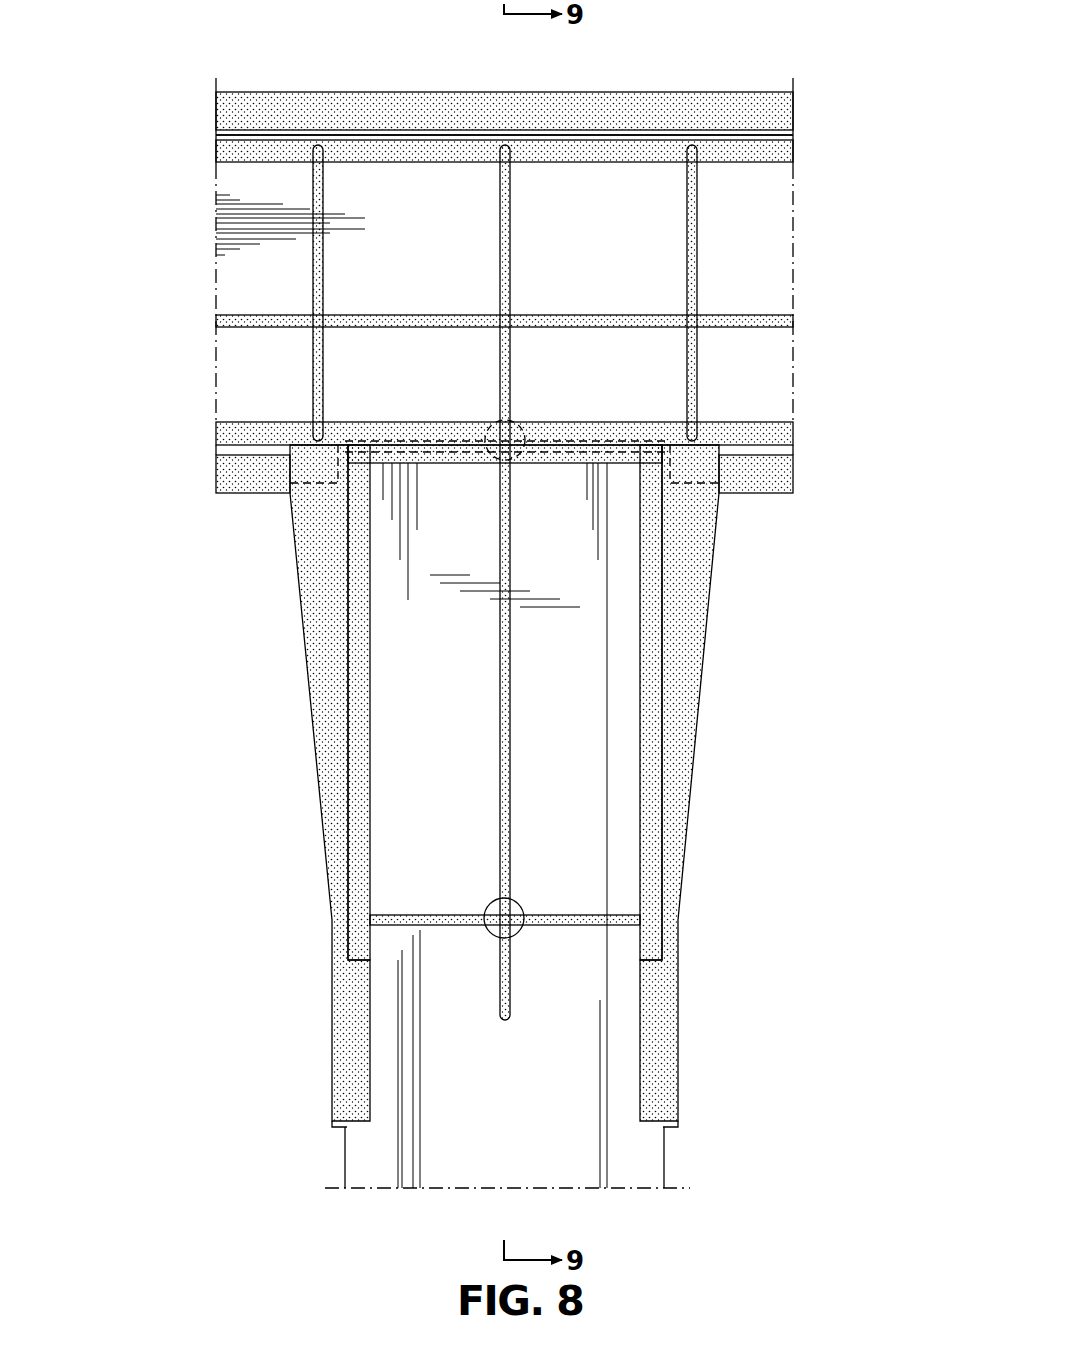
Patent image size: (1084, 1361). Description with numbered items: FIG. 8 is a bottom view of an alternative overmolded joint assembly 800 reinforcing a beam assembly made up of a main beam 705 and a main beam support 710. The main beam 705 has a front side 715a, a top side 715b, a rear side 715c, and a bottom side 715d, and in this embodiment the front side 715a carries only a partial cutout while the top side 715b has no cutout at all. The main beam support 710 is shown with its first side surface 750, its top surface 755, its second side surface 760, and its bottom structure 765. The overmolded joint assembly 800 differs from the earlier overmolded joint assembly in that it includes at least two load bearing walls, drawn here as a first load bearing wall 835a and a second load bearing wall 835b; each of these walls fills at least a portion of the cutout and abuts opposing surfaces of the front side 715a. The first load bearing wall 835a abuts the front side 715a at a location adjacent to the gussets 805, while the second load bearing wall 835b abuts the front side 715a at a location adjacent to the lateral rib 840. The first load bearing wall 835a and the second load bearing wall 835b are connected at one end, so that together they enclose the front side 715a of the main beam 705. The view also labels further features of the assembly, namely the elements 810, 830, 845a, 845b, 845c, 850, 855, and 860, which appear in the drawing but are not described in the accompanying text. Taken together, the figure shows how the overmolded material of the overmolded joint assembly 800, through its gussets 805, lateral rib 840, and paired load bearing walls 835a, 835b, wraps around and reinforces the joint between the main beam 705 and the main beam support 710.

The main beam 705 is at (755, 242).
The main beam support 710 is at (665, 1128).
The front side 715a is at (450, 443).
The top side 715b is at (768, 292).
The rear side 715c is at (232, 135).
The bottom side 715d is at (255, 270).
The first side surface 750 is at (665, 1170).
The top surface 755 is at (495, 1140).
The second side surface 760 is at (352, 1157).
The bottom structure 765 is at (365, 1110).
The overmolded joint assembly 800 is at (740, 590).
The gussets 805 is at (362, 608).
The gate region 810 is at (302, 495).
The refractory wall 830 is at (720, 105).
The first load bearing wall 835a is at (436, 462).
The second load bearing wall 835b is at (620, 432).
The lateral rib 840 is at (245, 152).
The pillar 845a is at (322, 142).
The pillar 845b is at (505, 143).
The pillar 845c is at (690, 140).
The cross brace 850 is at (415, 915).
The joint 855 is at (515, 425).
The joint 860 is at (520, 903).